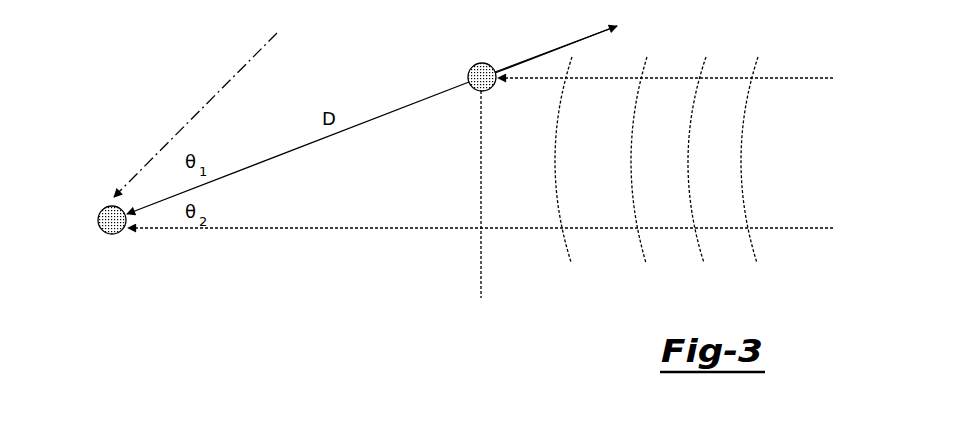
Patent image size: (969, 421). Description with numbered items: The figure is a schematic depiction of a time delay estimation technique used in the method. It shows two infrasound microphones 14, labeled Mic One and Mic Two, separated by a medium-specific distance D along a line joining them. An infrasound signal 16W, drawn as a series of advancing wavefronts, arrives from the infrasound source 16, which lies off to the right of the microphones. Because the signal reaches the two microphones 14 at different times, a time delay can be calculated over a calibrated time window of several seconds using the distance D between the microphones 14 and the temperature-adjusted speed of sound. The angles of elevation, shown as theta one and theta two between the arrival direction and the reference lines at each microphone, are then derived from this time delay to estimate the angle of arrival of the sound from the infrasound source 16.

The infrasound microphone 14 is at (467, 72).
The infrasound source 16 is at (678, 154).
The infrasound signal 16W is at (746, 101).